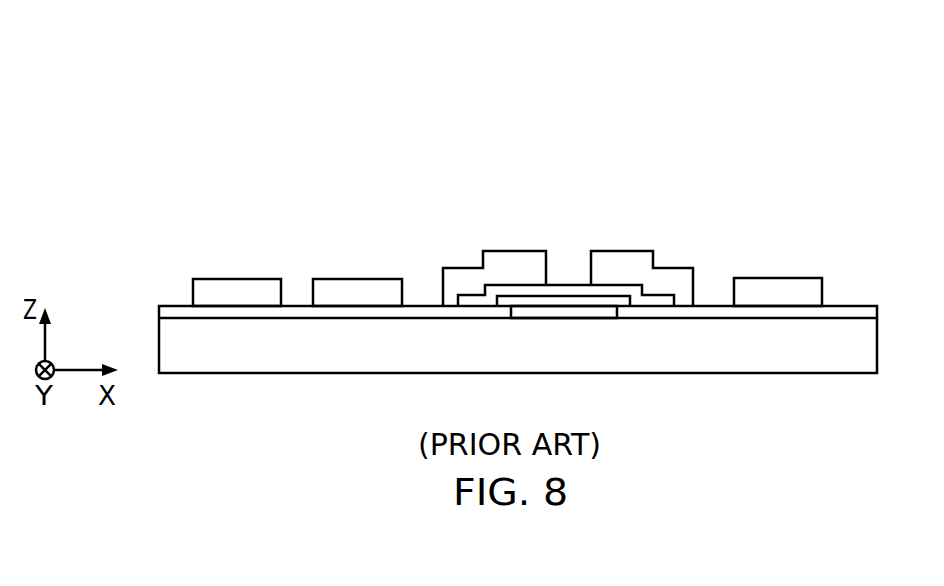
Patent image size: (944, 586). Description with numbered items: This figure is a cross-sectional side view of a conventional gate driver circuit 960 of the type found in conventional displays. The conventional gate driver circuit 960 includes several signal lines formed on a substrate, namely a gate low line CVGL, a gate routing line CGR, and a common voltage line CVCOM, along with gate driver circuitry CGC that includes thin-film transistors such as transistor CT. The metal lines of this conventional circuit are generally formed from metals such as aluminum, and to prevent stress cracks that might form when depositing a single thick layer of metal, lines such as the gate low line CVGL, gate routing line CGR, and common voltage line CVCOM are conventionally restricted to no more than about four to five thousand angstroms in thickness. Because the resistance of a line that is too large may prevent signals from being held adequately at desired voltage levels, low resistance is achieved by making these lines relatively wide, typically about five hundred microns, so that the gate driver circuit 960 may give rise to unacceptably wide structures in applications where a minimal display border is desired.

The conventional gate driver circuit 960 is at (541, 54).
The gate low line CVGL is at (305, 200).
The gate routing line CGR is at (425, 200).
The gate driver circuitry CGC is at (710, 200).
The transistor CT is at (616, 230).
The common voltage line CVCOM is at (830, 200).